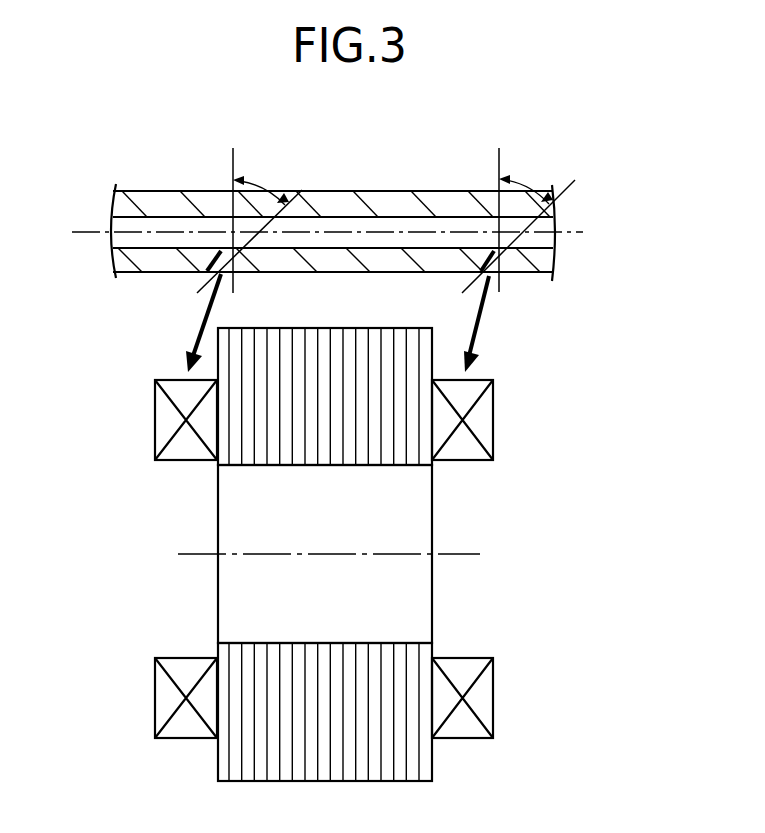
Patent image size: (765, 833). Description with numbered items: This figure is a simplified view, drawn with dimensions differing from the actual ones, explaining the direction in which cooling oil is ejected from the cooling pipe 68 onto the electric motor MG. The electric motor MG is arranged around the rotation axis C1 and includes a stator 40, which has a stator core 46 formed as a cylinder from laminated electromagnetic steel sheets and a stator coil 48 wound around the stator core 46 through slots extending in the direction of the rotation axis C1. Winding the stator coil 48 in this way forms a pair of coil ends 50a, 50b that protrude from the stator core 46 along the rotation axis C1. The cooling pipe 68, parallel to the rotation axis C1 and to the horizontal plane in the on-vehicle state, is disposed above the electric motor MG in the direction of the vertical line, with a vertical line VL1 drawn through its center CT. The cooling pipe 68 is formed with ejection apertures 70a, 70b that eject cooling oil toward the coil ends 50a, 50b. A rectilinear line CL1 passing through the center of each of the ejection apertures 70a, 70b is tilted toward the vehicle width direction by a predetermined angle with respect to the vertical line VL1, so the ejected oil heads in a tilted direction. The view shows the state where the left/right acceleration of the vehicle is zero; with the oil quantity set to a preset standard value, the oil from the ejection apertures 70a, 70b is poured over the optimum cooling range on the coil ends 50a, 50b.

The stator 40 is at (104, 369).
The stator core 46 is at (348, 335).
The stator coil 48 is at (512, 424).
The coil end 50a is at (180, 448).
The coil end 50b is at (465, 448).
The cooling pipe 68 is at (370, 178).
The ejection aperture 70a is at (213, 264).
The ejection aperture 70b is at (479, 264).
The center of the cooling pipe CT is at (90, 235).
The rotation axis C1 is at (458, 556).
The vertical line VL1 is at (238, 155).
The rectilinear line CL1 is at (315, 178).
The electric motor MG is at (588, 306).